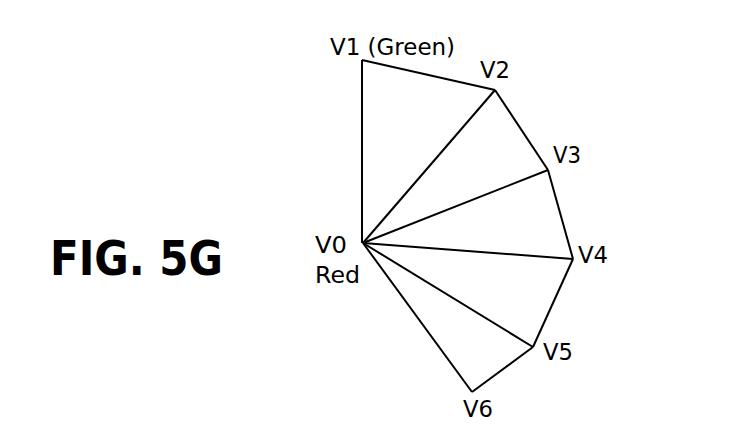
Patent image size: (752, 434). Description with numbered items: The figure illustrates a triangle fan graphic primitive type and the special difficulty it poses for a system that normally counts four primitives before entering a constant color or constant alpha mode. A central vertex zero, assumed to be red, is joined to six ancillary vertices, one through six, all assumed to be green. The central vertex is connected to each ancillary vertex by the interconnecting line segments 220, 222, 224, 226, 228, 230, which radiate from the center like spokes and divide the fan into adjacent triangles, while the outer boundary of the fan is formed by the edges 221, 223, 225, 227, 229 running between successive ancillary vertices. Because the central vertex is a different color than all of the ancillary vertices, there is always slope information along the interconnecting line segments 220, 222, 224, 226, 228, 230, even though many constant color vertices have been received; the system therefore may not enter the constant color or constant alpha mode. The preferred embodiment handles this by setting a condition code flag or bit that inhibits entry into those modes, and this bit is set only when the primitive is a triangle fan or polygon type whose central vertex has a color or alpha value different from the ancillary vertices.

The line segment 220 is at (360, 146).
The edge V1-V2 221 is at (443, 77).
The line segment 222 is at (463, 122).
The edge V2-V3 223 is at (520, 122).
The line segment 224 is at (505, 185).
The edge V3-V4 225 is at (563, 208).
The line segment 226 is at (533, 255).
The edge V4-V5 227 is at (555, 303).
The line segment 228 is at (493, 322).
The edge V5-V6 229 is at (503, 372).
The line segment 230 is at (420, 325).